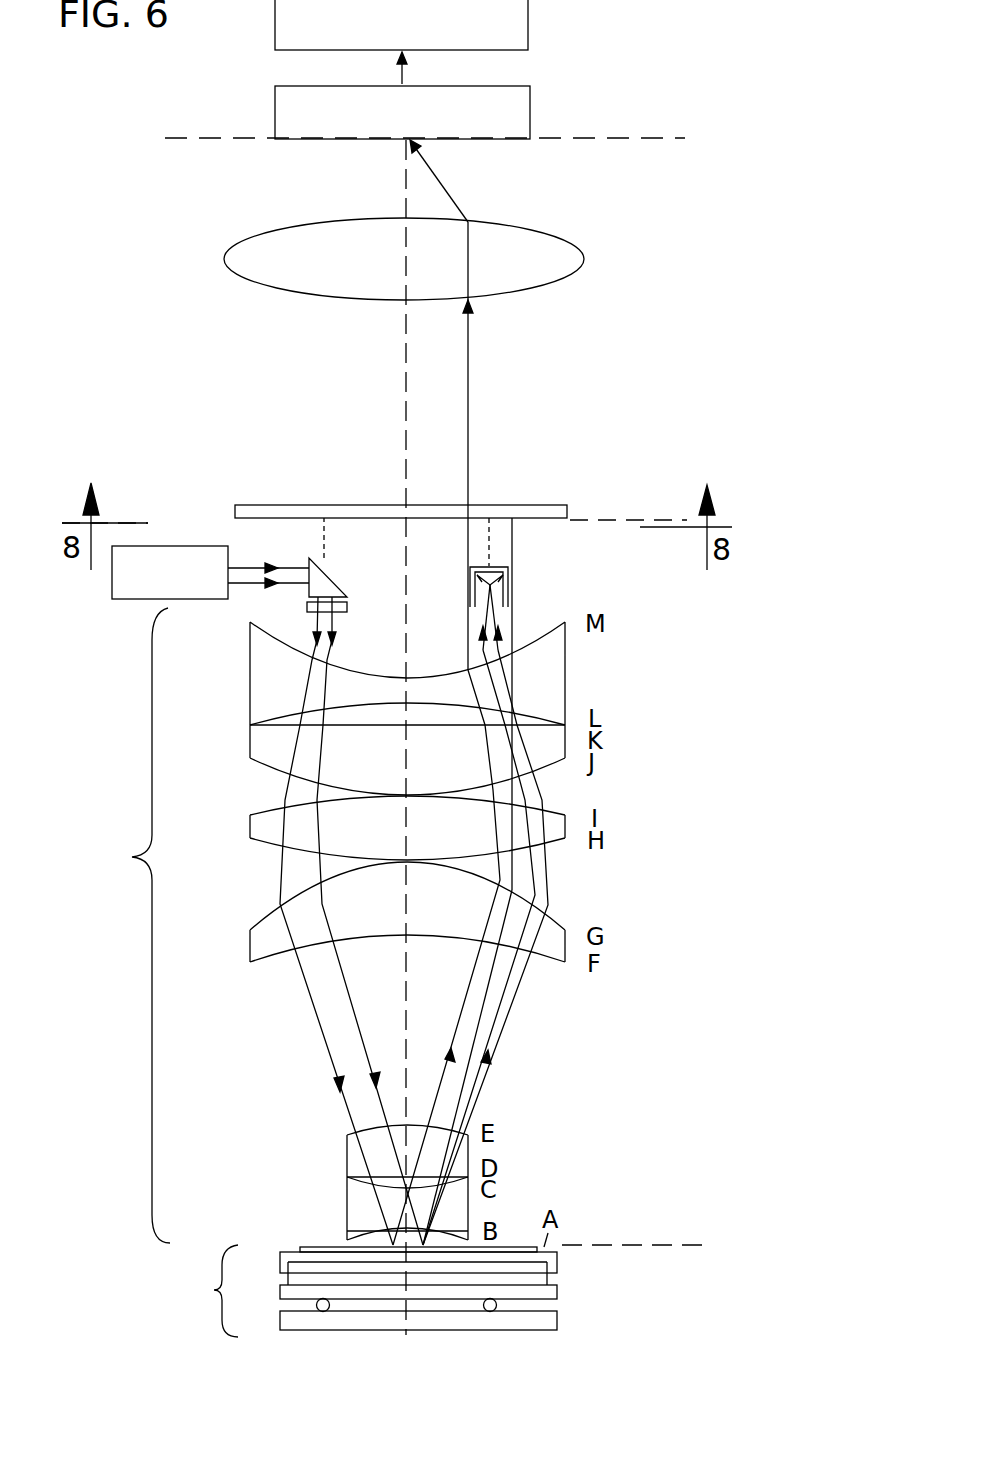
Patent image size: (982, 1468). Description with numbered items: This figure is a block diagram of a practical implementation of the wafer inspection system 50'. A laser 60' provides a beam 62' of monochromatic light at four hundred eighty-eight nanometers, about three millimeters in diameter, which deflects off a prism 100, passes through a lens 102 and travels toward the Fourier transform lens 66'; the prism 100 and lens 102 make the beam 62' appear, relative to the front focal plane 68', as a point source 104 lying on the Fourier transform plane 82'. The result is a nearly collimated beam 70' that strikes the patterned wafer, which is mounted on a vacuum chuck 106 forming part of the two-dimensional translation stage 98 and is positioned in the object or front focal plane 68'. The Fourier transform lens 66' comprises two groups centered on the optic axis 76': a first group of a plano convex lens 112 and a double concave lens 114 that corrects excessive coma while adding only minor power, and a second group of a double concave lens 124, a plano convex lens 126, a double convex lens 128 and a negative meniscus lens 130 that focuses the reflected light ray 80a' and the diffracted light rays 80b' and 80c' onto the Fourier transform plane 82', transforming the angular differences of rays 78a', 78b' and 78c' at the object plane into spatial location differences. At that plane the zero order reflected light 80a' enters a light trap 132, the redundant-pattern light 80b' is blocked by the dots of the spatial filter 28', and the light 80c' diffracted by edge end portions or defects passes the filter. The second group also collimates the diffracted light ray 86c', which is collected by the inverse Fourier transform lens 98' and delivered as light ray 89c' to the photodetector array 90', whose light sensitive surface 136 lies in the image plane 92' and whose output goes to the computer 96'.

The computer 96' is at (446, 25).
The photodetector array 90' is at (456, 95).
The image plane 92' is at (425, 176).
The light sensitive surface 136 is at (418, 146).
The light ray 89c' is at (480, 184).
The inverse Fourier transform lens 98' is at (456, 259).
The optic axis 76' is at (353, 737).
The diffracted light ray 86c' is at (521, 446).
The spatial filter 28' is at (427, 487).
The Fourier transform plane 82' is at (374, 557).
The laser 60' is at (203, 602).
The prism 100 is at (341, 575).
The point source 104 is at (324, 520).
The lens 102 is at (348, 606).
The diffracted light ray 80c' is at (558, 704).
The light trap 132 is at (489, 565).
The diffracted light ray 80b' is at (451, 599).
The reflected light ray 80a' is at (535, 617).
The Fourier transform lens 66' is at (131, 925).
The double concave lens 124 is at (250, 660).
The plano convex lens 126 is at (250, 745).
The double convex lens 128 is at (250, 823).
The negative meniscus lens 130 is at (250, 945).
The beam of monochromatic light 62' is at (321, 921).
The light ray 78a' is at (485, 947).
The diffracted light ray 78b' is at (467, 1067).
The diffracted light ray 78c' is at (555, 957).
The plano convex lens 112 is at (345, 1152).
The double concave lens 114 is at (347, 1202).
The collimated beam of monochromatic light 70' is at (359, 1222).
The vacuum chuck 106 is at (505, 1247).
The translation stage 98 is at (368, 1291).
The front focal plane 68' is at (633, 1281).
The inspection system 50' is at (65, 1169).